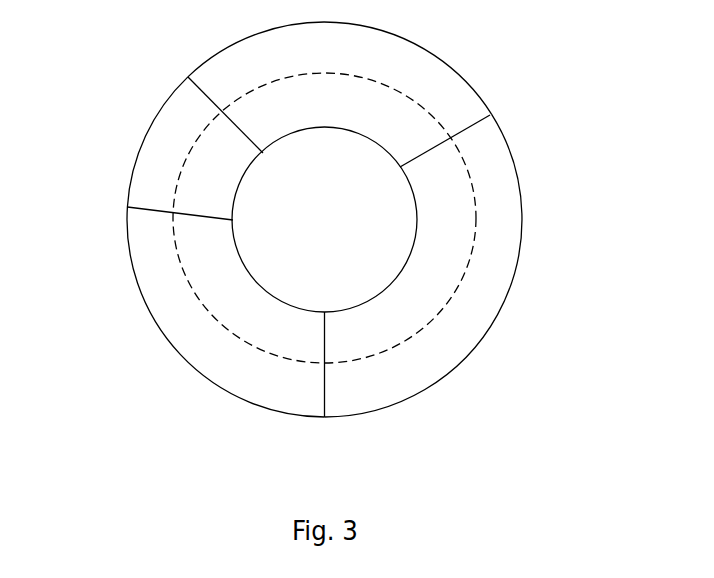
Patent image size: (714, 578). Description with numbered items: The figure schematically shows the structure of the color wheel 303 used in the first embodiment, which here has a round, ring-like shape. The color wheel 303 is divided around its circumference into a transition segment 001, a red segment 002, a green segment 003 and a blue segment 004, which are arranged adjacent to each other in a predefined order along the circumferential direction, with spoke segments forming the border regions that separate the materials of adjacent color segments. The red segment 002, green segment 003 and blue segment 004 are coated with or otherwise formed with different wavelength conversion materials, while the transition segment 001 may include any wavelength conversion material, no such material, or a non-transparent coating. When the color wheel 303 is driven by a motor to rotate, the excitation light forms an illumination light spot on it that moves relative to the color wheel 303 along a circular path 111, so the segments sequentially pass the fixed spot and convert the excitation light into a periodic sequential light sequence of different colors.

The transition segment 001 is at (155, 167).
The red segment 002 is at (447, 88).
The green segment 003 is at (370, 391).
The blue segment 004 is at (235, 376).
The circular path 111 is at (445, 312).
The color wheel 303 is at (167, 72).